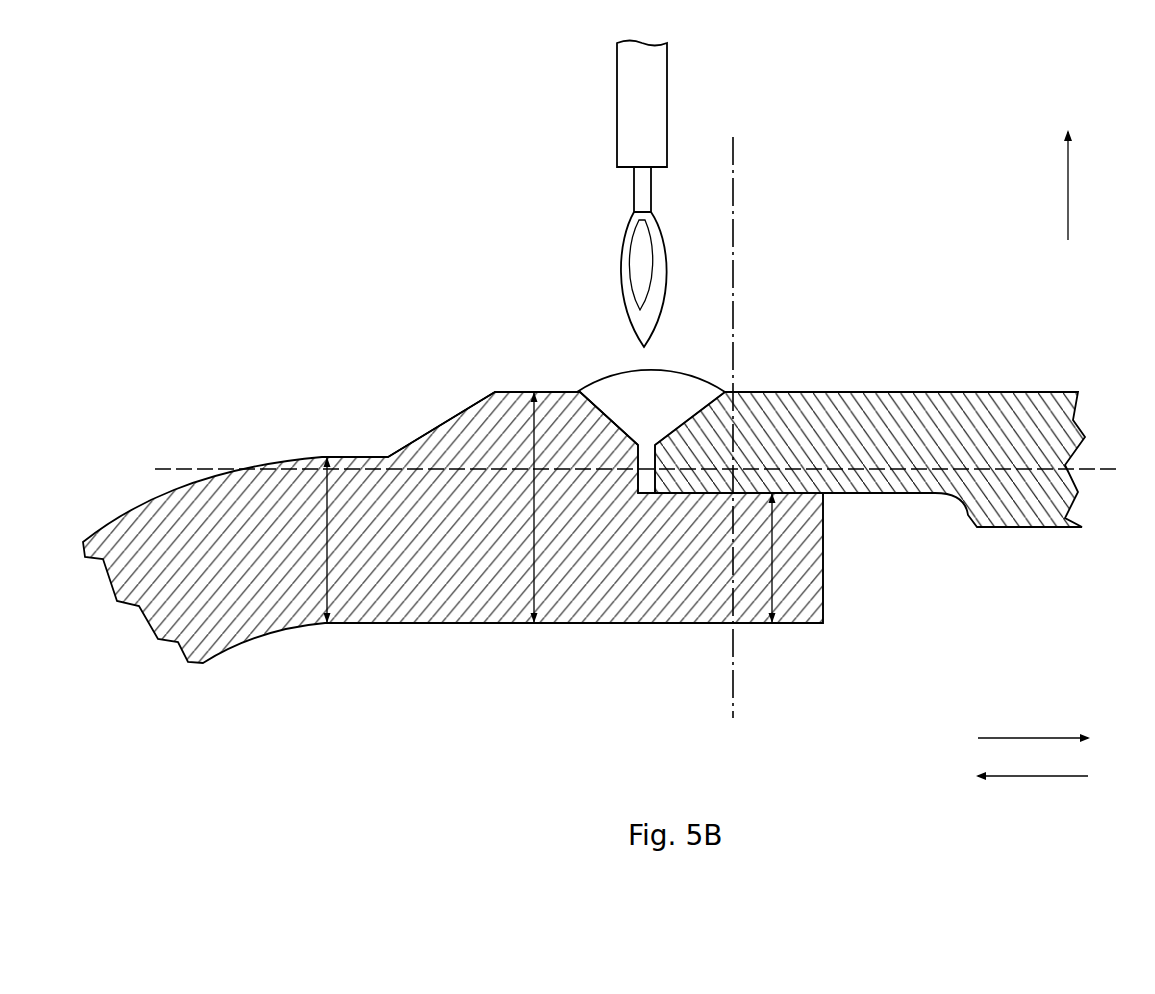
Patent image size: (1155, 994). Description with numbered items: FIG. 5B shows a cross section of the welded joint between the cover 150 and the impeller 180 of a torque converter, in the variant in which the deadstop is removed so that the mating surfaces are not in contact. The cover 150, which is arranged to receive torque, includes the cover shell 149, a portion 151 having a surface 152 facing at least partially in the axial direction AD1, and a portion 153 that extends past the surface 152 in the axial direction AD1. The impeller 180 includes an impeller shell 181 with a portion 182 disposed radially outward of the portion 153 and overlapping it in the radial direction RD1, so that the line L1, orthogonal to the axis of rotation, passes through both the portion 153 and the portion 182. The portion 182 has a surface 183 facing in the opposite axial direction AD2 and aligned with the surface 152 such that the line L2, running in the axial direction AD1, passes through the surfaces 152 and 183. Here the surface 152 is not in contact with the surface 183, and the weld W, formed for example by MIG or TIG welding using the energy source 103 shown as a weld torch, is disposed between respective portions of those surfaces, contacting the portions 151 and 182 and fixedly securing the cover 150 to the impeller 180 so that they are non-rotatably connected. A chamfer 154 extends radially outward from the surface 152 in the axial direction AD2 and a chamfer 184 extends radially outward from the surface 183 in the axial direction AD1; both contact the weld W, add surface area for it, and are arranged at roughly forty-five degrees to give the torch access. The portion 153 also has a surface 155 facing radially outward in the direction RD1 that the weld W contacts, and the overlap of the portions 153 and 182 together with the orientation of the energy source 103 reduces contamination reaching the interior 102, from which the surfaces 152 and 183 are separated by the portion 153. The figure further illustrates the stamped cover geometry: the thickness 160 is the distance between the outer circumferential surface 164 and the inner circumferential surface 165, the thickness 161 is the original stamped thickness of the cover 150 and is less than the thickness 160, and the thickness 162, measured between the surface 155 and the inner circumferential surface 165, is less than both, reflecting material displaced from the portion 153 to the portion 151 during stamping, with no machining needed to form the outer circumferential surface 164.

The interior 102 is at (435, 677).
The energy source 103 is at (617, 135).
The cover shell 149 is at (365, 446).
The cover 150 is at (370, 322).
The portion 151 is at (498, 435).
The surface 152 is at (638, 458).
The portion 153 is at (812, 590).
The chamfer 154 is at (598, 413).
The surface 155 is at (647, 497).
The thickness 160 is at (534, 552).
The thickness 161 is at (327, 552).
The thickness 162 is at (772, 548).
The outer circumferential surface 164 is at (515, 392).
The inner circumferential surface 165 is at (565, 623).
The impeller 180 is at (875, 318).
The impeller shell 181 is at (944, 381).
The portion 182 is at (760, 423).
The surface 183 is at (668, 460).
The chamfer 184 is at (683, 413).
The weld W is at (656, 424).
The line L1 is at (733, 192).
The line L2 is at (190, 466).
The radial direction RD1 is at (1068, 177).
The axial direction AD1 is at (1013, 738).
The axial direction AD2 is at (1033, 776).